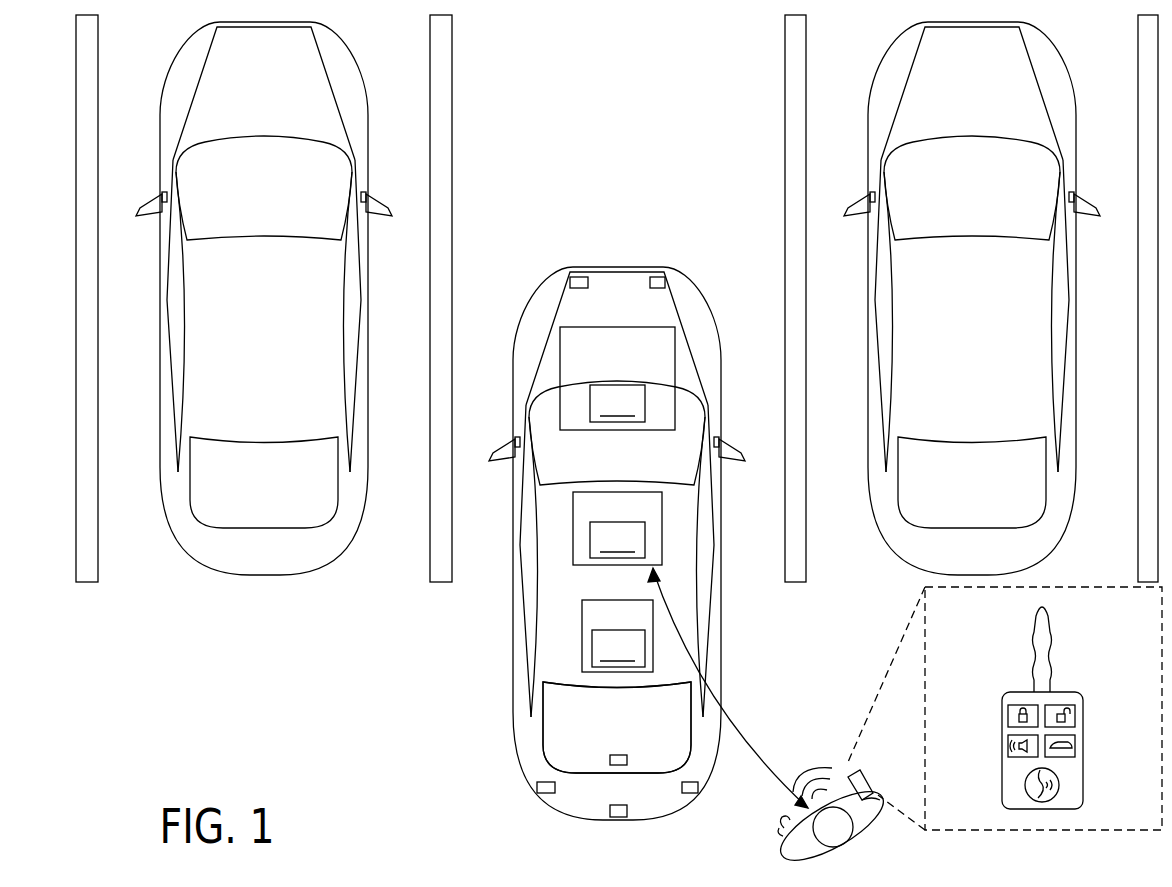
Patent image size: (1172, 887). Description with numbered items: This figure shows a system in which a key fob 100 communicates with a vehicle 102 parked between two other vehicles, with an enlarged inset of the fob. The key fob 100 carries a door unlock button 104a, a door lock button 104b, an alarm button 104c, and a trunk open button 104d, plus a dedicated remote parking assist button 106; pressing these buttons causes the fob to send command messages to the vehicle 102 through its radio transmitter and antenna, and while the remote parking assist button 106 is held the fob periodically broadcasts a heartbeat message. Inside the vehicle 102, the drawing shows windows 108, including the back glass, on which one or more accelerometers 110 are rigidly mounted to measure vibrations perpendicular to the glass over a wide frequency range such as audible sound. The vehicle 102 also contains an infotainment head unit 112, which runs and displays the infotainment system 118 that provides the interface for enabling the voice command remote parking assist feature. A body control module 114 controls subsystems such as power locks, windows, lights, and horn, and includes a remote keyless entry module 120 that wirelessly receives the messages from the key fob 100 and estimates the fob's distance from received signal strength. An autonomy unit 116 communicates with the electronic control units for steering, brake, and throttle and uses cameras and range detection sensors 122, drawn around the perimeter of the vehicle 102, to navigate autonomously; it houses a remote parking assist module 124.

The key fob 100 is at (868, 777).
The vehicle 102 is at (698, 293).
The door unlock button 104a is at (1070, 705).
The door lock button 104b is at (1018, 705).
The alarm button 104c is at (1008, 745).
The trunk open button 104d is at (1077, 745).
The remote parking assist (RePA) button 106 is at (1038, 802).
The windows 108 is at (560, 738).
The accelerometers 110 is at (616, 755).
The infotainment head unit (ITHU) 112 is at (582, 632).
The body control module (BCM) 114 is at (662, 527).
The autonomy unit 116 is at (675, 370).
The infotainment system 118 is at (618, 648).
The remote keyless entry module 120 is at (617, 540).
The range detection sensors 122 is at (579, 277).
The remote parking assist module 124 is at (617, 403).